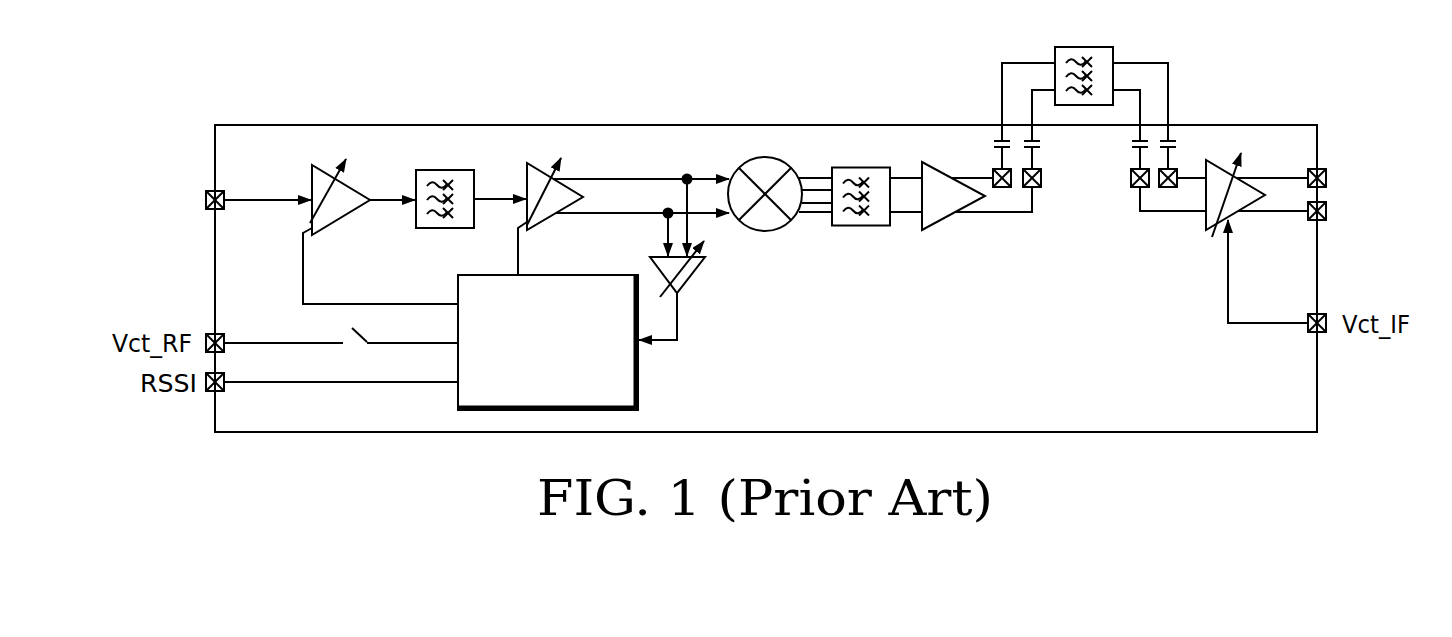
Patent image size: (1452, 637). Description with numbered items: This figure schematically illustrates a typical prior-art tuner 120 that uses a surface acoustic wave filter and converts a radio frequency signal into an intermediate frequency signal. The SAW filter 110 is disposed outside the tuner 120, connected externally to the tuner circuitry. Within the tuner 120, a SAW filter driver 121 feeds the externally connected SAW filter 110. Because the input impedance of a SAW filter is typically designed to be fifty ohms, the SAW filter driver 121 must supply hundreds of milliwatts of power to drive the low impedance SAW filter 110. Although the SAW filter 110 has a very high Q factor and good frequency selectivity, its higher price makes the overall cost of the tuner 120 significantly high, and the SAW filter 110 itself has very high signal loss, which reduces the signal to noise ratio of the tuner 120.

The SAW filter 110 is at (1055, 50).
The tuner 120 is at (625, 125).
The SAW filter driver 121 is at (935, 223).